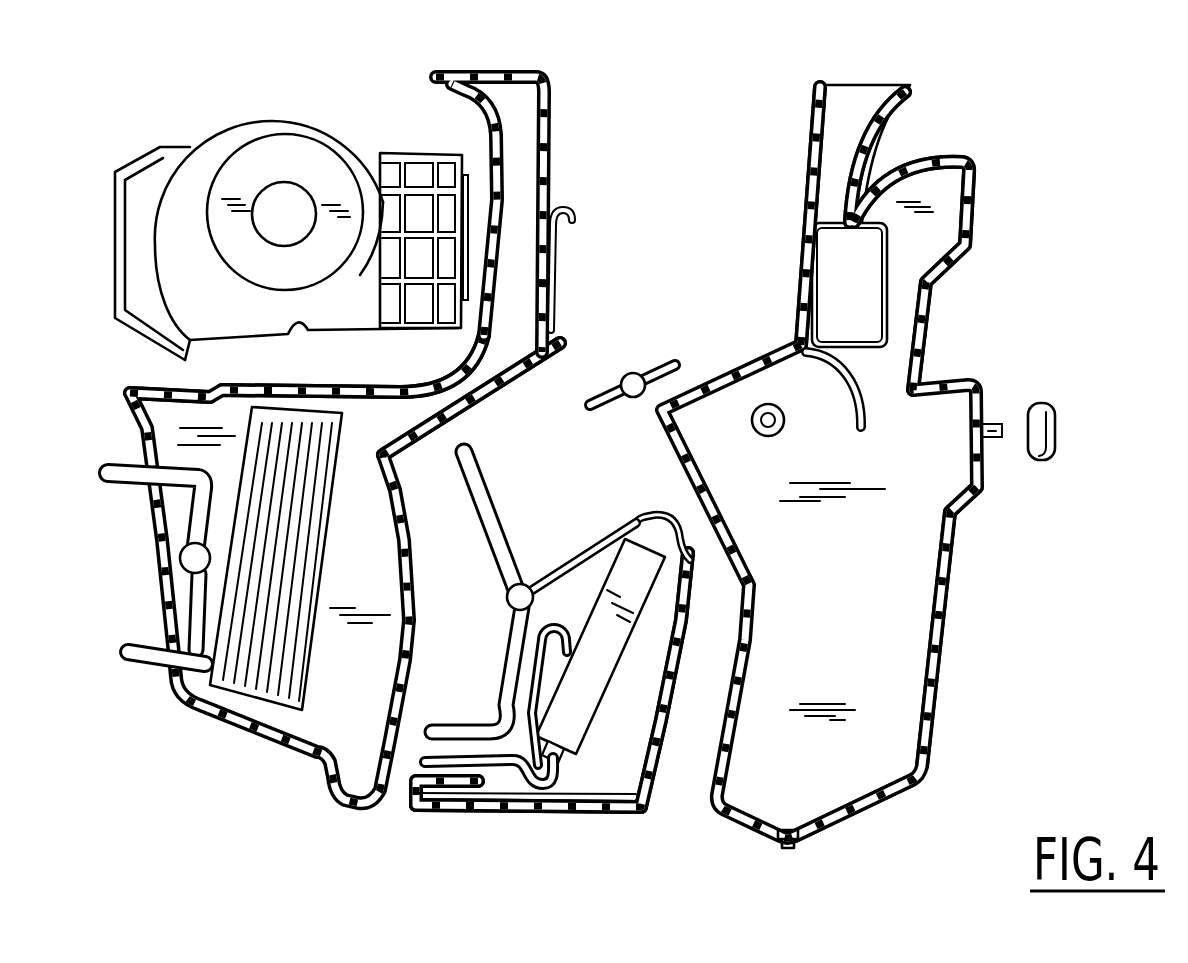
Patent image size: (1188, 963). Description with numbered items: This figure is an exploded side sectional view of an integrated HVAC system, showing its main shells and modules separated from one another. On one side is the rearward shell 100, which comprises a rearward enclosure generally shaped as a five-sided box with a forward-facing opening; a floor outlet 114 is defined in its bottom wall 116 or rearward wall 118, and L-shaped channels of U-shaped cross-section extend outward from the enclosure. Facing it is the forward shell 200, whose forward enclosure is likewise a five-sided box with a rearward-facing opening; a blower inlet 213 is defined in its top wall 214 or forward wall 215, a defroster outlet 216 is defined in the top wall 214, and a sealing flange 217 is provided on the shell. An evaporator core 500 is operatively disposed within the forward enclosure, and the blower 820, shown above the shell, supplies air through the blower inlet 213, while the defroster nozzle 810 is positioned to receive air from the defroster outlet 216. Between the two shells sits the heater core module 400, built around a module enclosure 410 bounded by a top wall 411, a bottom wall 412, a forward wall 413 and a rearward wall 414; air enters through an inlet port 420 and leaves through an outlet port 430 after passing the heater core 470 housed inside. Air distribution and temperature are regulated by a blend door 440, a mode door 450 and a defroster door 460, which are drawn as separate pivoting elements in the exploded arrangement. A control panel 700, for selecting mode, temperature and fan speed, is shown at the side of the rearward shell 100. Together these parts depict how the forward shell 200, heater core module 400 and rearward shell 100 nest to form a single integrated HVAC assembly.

The rearward shell 100 is at (1058, 578).
The floor outlet 114 is at (892, 803).
The bottom wall 116 is at (840, 817).
The rearward wall 118 is at (933, 668).
The forward shell 200 is at (226, 758).
The blower inlet 213 is at (180, 393).
The top wall 214 is at (330, 393).
The forward wall 215 is at (157, 543).
The defroster outlet 216 is at (528, 392).
The sealing flange 217 is at (437, 380).
The heater core module 400 is at (456, 865).
The module enclosure 410 is at (640, 780).
The top wall of module enclosure 411 is at (655, 505).
The bottom wall of module enclosure 412 is at (521, 810).
The forward wall of module enclosure 413 is at (508, 652).
The rearward wall of module enclosure 414 is at (663, 680).
The inlet port of module enclosure 420 is at (410, 797).
The outlet port of module enclosure 430 is at (598, 537).
The blend door 440 is at (478, 493).
The mode door 450 is at (925, 330).
The defroster door 460 is at (650, 364).
The heater core 470 is at (577, 740).
The evaporator core 500 is at (213, 717).
The control panel 700 is at (1018, 375).
The defroster nozzle 810 is at (813, 132).
The blower 820 is at (230, 137).